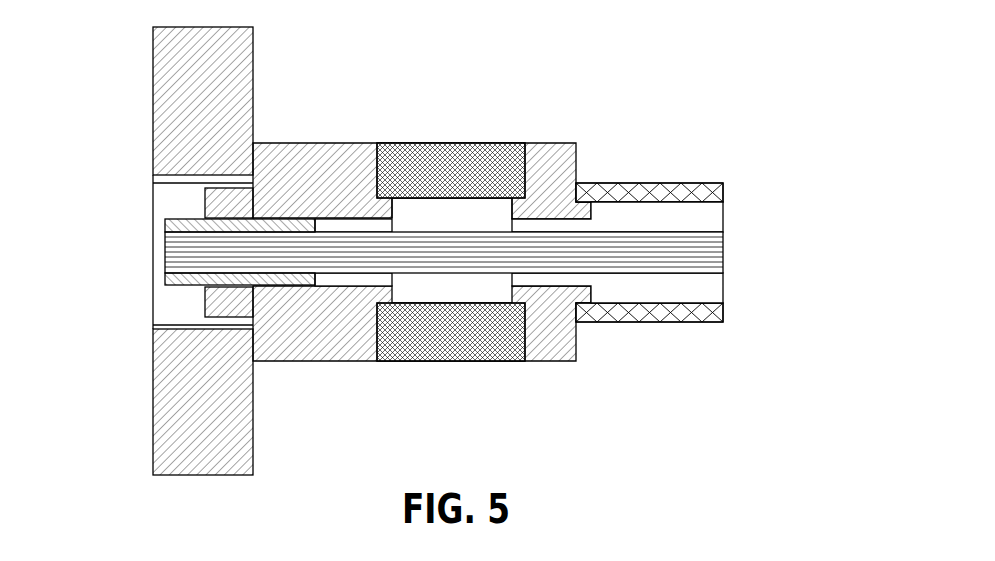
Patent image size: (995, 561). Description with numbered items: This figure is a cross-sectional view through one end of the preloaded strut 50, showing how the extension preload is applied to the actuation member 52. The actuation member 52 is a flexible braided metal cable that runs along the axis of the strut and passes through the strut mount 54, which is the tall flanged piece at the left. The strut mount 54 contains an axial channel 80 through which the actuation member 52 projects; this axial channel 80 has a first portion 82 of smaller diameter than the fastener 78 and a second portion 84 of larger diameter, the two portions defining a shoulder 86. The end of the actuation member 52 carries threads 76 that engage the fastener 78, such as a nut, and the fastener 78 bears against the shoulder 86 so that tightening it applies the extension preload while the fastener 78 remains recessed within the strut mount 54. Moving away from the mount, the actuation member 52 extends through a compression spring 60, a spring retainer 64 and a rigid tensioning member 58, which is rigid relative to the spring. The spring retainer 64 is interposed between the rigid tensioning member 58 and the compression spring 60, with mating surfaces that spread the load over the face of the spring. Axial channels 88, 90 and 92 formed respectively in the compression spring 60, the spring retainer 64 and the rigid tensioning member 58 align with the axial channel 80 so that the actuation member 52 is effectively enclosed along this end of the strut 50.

The strut 50 is at (118, 80).
The actuation member 52 is at (672, 230).
The strut mount 54 is at (177, 470).
The rigid tensioning member 58 is at (712, 325).
The compression spring 60 is at (447, 362).
The spring retainer 64 is at (557, 143).
The threads 76 is at (187, 220).
The fastener 78 is at (205, 317).
The axial channel 80 is at (156, 257).
The first portion 82 is at (357, 210).
The second portion 84 is at (157, 325).
The shoulder 86 is at (157, 183).
The axial channel 88 is at (421, 199).
The axial channel 90 is at (515, 200).
The axial channel 92 is at (717, 202).